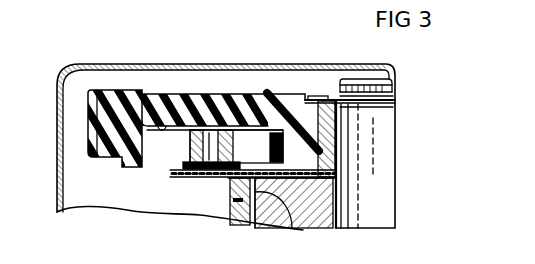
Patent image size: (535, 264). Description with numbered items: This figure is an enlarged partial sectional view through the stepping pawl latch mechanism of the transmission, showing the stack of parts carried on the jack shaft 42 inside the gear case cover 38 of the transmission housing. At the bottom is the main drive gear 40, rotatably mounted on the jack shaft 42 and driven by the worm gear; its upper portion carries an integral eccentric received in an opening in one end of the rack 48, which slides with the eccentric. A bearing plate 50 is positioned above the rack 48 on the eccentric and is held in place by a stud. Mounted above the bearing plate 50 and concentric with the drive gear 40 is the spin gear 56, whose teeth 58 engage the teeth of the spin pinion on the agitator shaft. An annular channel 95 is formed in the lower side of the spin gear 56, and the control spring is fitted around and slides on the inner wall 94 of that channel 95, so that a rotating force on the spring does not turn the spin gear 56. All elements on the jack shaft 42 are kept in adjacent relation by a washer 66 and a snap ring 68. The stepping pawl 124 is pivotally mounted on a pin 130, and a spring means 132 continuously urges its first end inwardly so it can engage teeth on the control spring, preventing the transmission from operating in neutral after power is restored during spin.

The gear case cover 38 is at (227, 64).
The teeth 58 is at (92, 95).
The spin gear 56 is at (198, 100).
The annular channel 95 is at (162, 124).
The washer 66 is at (318, 100).
The snap ring 68 is at (332, 95).
The jack shaft 42 is at (370, 160).
The inner wall 94 is at (337, 167).
The stepping pawl 124 is at (190, 134).
The spring means 132 is at (186, 160).
The pin 130 is at (212, 177).
The bearing plate 50 is at (163, 207).
The rack 48 is at (243, 203).
The main drive gear 40 is at (291, 216).